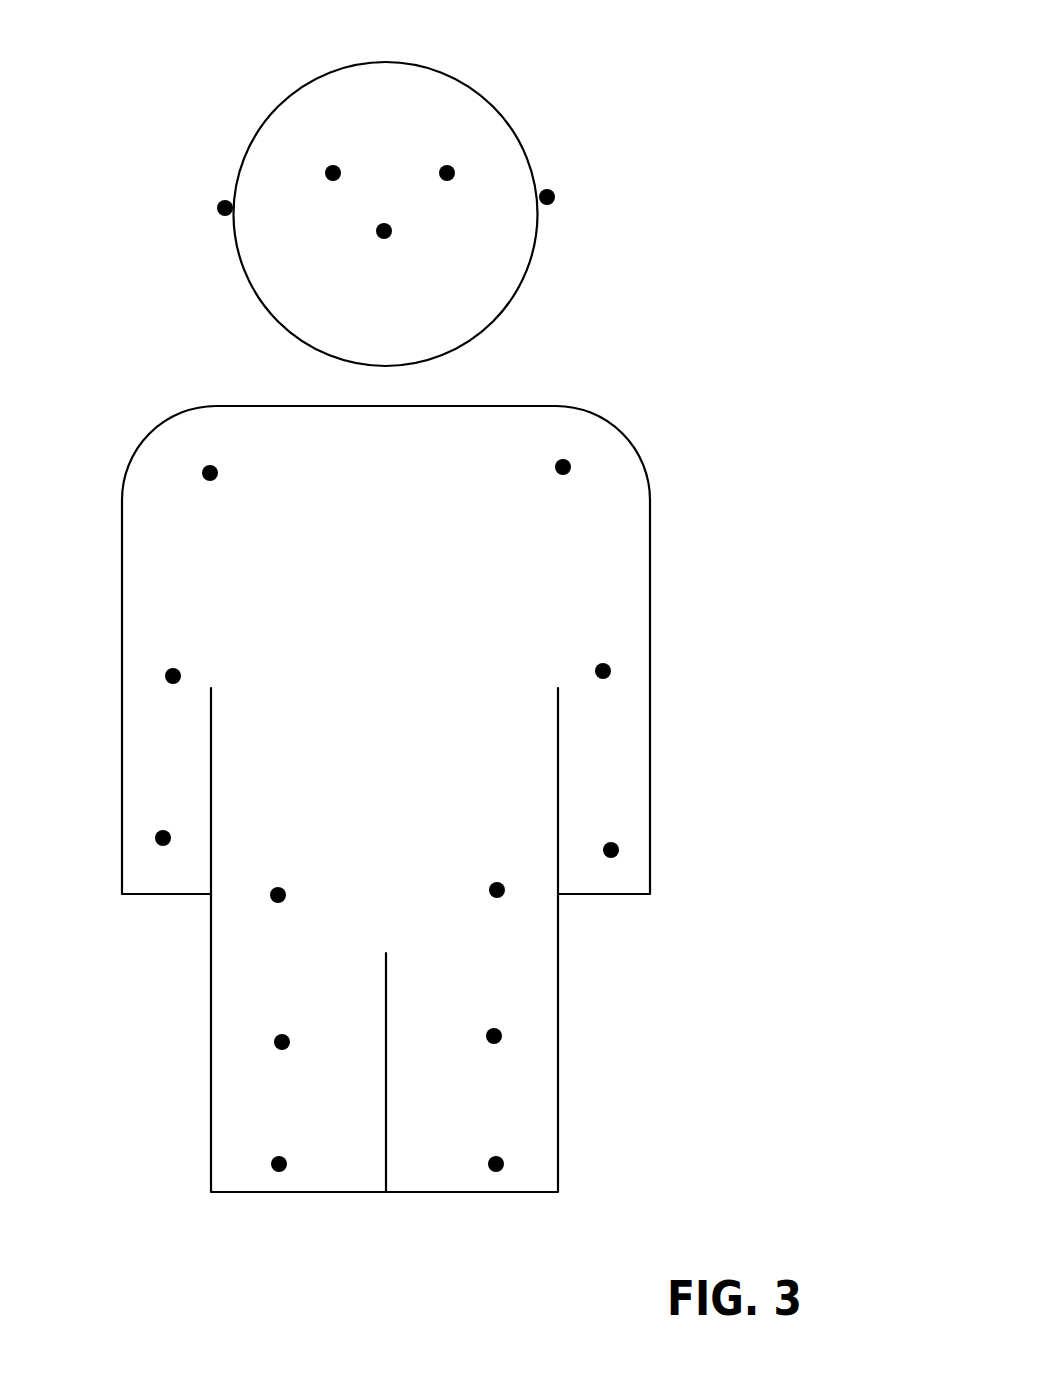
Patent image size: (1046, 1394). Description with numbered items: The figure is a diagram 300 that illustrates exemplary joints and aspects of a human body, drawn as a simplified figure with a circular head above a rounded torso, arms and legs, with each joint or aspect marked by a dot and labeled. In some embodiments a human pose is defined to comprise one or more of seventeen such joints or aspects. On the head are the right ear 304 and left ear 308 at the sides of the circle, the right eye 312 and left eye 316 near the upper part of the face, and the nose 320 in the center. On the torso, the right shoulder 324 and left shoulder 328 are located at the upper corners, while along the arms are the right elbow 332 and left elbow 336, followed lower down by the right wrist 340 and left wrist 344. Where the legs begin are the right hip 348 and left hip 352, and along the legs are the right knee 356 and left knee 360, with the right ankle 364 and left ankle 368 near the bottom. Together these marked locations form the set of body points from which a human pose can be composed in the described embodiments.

The diagram 300 is at (782, 34).
The right ear 304 is at (225, 208).
The left ear 308 is at (547, 197).
The right eye 312 is at (333, 173).
The left eye 316 is at (447, 173).
The nose 320 is at (384, 231).
The right shoulder 324 is at (210, 473).
The left shoulder 328 is at (563, 467).
The right elbow 332 is at (173, 676).
The left elbow 336 is at (603, 671).
The right wrist 340 is at (163, 838).
The left wrist 344 is at (611, 850).
The right hip 348 is at (278, 895).
The left hip 352 is at (497, 890).
The right knee 356 is at (282, 1042).
The left knee 360 is at (494, 1036).
The right ankle 364 is at (279, 1164).
The left ankle 368 is at (496, 1164).